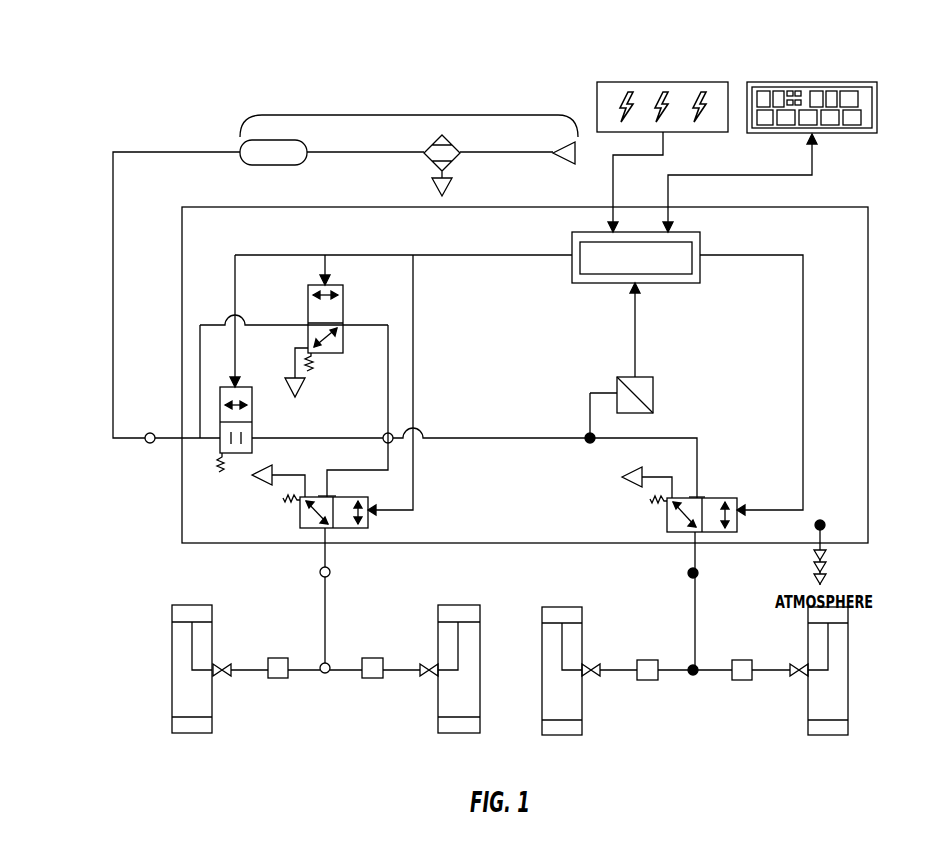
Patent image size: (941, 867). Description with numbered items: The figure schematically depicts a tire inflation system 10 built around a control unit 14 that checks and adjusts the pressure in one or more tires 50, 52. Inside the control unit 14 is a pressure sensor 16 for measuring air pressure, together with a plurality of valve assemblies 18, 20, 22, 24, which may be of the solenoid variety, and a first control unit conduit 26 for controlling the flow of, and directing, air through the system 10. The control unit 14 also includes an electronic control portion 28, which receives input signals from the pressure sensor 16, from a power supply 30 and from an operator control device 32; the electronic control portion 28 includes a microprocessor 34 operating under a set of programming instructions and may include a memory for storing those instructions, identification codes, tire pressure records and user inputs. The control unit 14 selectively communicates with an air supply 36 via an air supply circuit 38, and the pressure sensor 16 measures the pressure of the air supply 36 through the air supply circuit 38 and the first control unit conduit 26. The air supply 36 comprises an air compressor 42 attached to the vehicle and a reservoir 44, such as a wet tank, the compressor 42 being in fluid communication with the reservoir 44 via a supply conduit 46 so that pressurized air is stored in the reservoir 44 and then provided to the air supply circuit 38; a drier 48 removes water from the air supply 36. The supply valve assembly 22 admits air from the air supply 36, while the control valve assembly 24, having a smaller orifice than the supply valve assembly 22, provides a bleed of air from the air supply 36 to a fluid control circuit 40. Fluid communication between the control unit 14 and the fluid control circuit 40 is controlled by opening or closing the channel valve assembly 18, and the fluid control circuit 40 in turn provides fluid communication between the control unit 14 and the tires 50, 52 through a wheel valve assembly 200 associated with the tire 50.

The tire inflation system 10 is at (873, 182).
The control unit 14 is at (853, 240).
The pressure sensor 16 is at (617, 378).
The channel valve assembly 18 is at (300, 519).
The valve assembly 20 is at (668, 517).
The supply valve assembly 22 is at (252, 400).
The control valve assembly 24 is at (343, 340).
The first control unit conduit 26 is at (490, 436).
The electronic control portion 28 is at (572, 248).
The power supply 30 is at (654, 82).
The operator control device 32 is at (807, 82).
The microprocessor 34 is at (703, 250).
The air supply 36 is at (405, 116).
The air supply circuit 38 is at (113, 301).
The fluid control circuit 40 is at (325, 600).
The air compressor 42 is at (543, 153).
The reservoir 44 is at (268, 166).
The supply conduit 46 is at (363, 153).
The drier 48 is at (455, 165).
The tire 50 is at (190, 605).
The tire 52 is at (455, 605).
The wheel valve assembly 200 is at (240, 648).